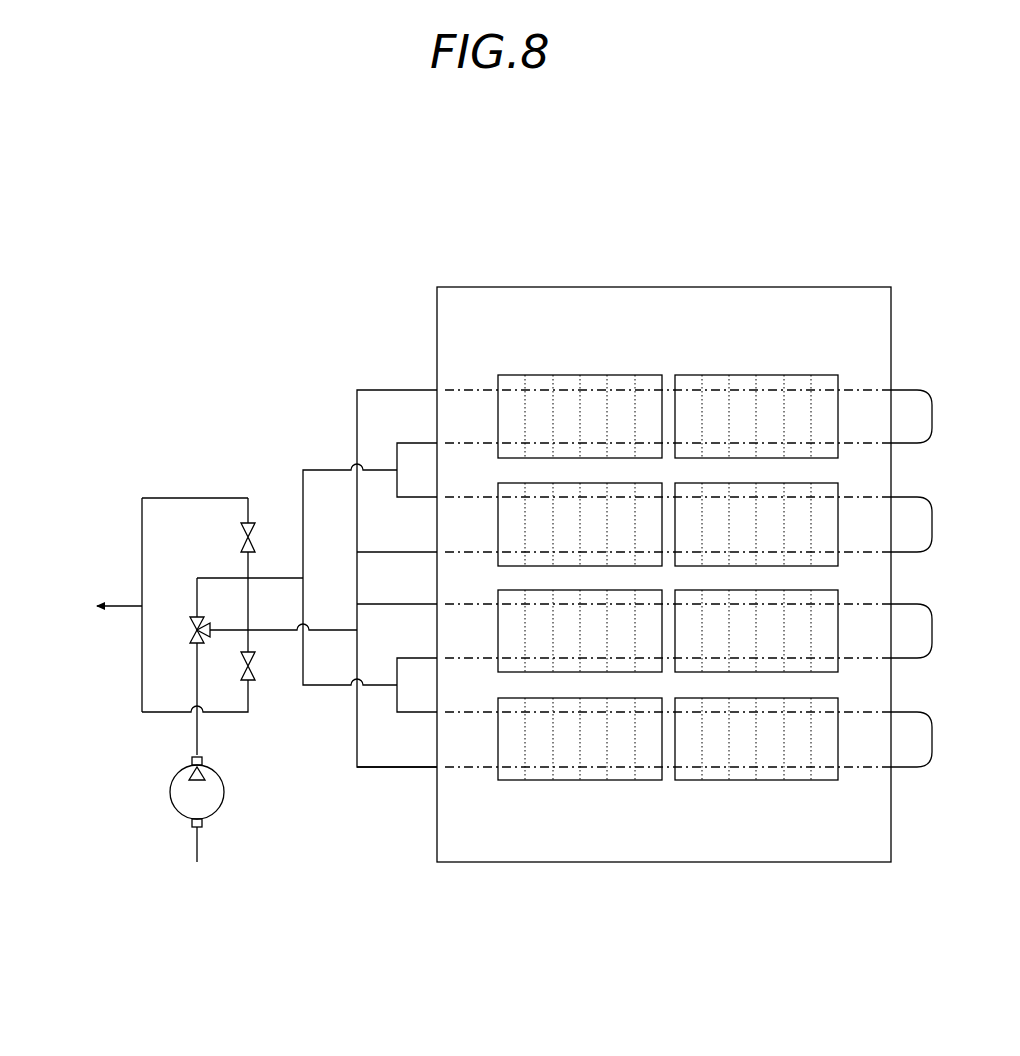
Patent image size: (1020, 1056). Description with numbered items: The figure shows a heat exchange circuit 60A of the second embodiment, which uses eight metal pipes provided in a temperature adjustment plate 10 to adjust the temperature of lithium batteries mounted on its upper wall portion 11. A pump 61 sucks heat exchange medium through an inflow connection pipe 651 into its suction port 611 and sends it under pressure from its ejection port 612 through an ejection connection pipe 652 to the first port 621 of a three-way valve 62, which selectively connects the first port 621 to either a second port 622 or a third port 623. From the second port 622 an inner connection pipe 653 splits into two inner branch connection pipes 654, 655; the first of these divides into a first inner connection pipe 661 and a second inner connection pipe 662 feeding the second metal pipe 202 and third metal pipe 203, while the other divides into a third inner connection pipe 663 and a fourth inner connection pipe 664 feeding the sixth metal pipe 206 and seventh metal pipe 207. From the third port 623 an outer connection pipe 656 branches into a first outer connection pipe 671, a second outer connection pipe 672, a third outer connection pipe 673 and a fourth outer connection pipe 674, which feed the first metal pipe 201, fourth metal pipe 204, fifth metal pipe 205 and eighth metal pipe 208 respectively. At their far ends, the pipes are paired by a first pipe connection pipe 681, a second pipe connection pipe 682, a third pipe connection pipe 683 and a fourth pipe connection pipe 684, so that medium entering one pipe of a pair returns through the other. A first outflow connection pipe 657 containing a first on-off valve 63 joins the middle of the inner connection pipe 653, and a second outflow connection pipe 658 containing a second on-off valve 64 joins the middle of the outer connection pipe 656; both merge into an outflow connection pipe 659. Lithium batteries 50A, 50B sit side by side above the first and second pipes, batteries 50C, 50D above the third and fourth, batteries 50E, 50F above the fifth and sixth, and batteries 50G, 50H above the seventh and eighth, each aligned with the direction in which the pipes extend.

The temperature adjustment plate 10 is at (644, 286).
The upper wall portion 11 is at (795, 300).
The heat exchange circuit 60A is at (284, 366).
The pump 61 is at (224, 794).
The suction port 611 is at (200, 832).
The ejection port 612 is at (200, 762).
The three-way valve 62 is at (208, 622).
The first port 621 is at (190, 646).
The second port 622 is at (193, 620).
The third port 623 is at (206, 645).
The first on-off valve 63 is at (256, 524).
The second on-off valve 64 is at (256, 657).
The inflow connection pipe 651 is at (195, 851).
The ejection connection pipe 652 is at (195, 738).
The inner connection pipe 653 is at (216, 577).
The inner branch connection pipe 654 is at (330, 468).
The inner branch connection pipe 655 is at (335, 688).
The outer connection pipe 656 is at (236, 631).
The first outflow connection pipe 657 is at (203, 497).
The second outflow connection pipe 658 is at (250, 710).
The outflow connection pipe 659 is at (114, 604).
The first inner connection pipe 661 is at (397, 443).
The second inner connection pipe 662 is at (397, 497).
The third inner connection pipe 663 is at (397, 658).
The fourth inner connection pipe 664 is at (397, 712).
The first outer connection pipe 671 is at (413, 388).
The second outer connection pipe 672 is at (415, 553).
The third outer connection pipe 673 is at (378, 603).
The fourth outer connection pipe 674 is at (400, 768).
The first pipe connection pipe 681 is at (912, 389).
The second pipe connection pipe 682 is at (912, 496).
The third pipe connection pipe 683 is at (912, 603).
The fourth pipe connection pipe 684 is at (912, 711).
The first metal pipe 201 is at (470, 389).
The second metal pipe 202 is at (470, 442).
The third metal pipe 203 is at (470, 496).
The fourth metal pipe 204 is at (470, 551).
The fifth metal pipe 205 is at (470, 603).
The sixth metal pipe 206 is at (470, 657).
The seventh metal pipe 207 is at (470, 711).
The eighth metal pipe 208 is at (470, 766).
The lithium battery 50A is at (651, 374).
The lithium battery 50B is at (817, 374).
The lithium battery 50C is at (646, 484).
The lithium battery 50D is at (820, 482).
The lithium battery 50E is at (646, 592).
The lithium battery 50F is at (820, 591).
The lithium battery 50G is at (646, 700).
The lithium battery 50H is at (820, 697).